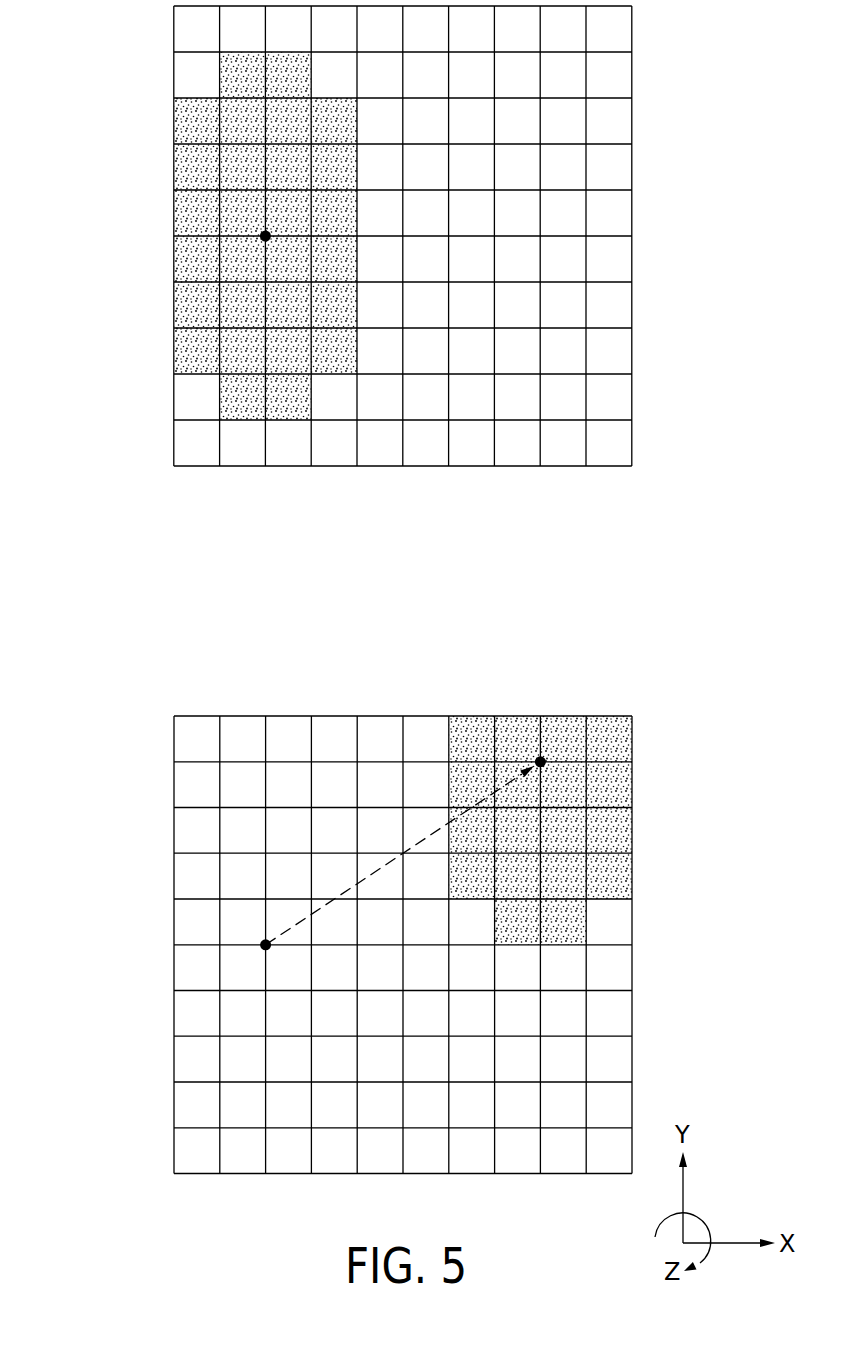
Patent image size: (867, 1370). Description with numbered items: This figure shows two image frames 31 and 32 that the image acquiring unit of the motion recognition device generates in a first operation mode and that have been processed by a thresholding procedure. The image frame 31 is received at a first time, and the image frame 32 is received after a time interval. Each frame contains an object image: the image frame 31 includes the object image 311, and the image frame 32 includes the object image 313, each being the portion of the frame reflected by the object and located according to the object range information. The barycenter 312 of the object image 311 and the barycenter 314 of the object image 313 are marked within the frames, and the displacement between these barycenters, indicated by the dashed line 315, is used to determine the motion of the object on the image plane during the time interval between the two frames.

The image frame 31 is at (144, 69).
The object image 311 is at (195, 160).
The barycenter 312 is at (263, 238).
The image frame 32 is at (148, 772).
The object image 313 is at (512, 733).
The barycenter 314 is at (543, 765).
The dashed line 315 is at (391, 860).